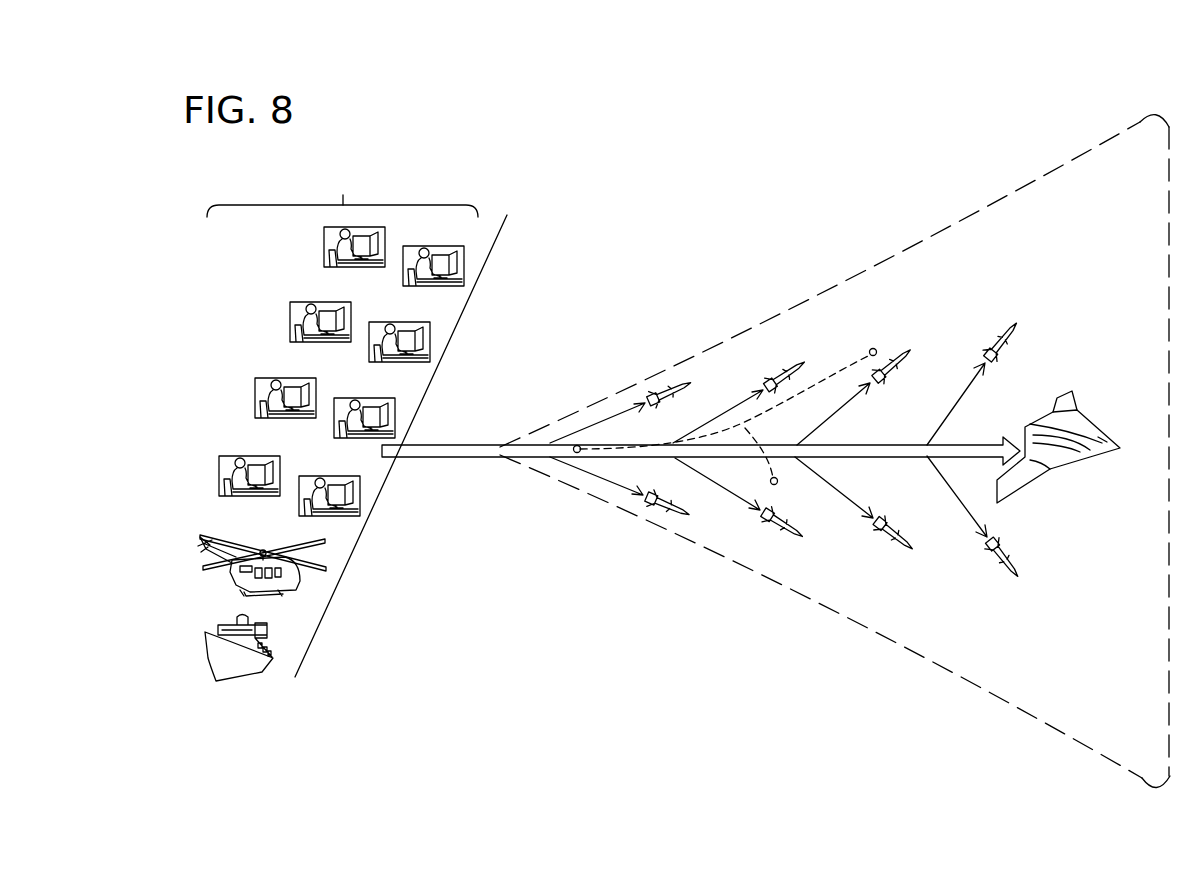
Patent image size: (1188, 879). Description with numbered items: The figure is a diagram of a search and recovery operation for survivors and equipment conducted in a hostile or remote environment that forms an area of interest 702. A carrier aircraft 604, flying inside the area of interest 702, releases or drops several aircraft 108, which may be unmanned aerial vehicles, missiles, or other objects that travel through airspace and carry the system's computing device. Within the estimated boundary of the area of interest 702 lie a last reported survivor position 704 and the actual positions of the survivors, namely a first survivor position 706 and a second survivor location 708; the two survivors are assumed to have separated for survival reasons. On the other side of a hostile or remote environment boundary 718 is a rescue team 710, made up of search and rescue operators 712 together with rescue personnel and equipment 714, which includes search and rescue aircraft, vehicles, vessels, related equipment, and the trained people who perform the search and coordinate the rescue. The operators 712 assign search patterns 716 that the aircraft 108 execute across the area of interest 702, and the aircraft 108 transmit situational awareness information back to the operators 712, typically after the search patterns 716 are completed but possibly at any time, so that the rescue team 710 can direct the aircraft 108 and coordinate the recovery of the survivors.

The aircraft 108 is at (688, 382).
The carrier aircraft 604 is at (1077, 407).
The area of interest 702 is at (1060, 166).
The last reported survivor position 704 is at (577, 445).
The first survivor position 706 is at (777, 483).
The second survivor location 708 is at (873, 348).
The rescue team 710 is at (342, 195).
The operators 712 is at (465, 263).
The rescue personnel and equipment 714 is at (300, 588).
The search patterns 716 is at (740, 397).
The hostile or remote environment boundary 718 is at (508, 215).